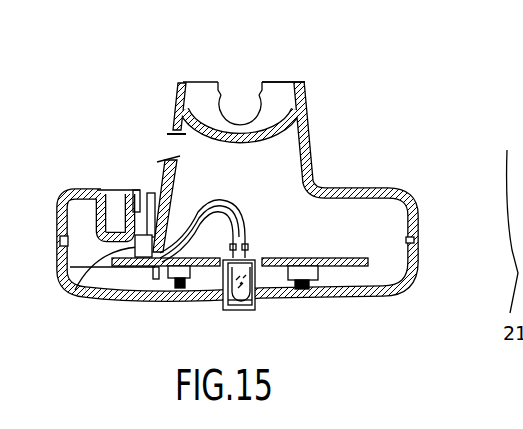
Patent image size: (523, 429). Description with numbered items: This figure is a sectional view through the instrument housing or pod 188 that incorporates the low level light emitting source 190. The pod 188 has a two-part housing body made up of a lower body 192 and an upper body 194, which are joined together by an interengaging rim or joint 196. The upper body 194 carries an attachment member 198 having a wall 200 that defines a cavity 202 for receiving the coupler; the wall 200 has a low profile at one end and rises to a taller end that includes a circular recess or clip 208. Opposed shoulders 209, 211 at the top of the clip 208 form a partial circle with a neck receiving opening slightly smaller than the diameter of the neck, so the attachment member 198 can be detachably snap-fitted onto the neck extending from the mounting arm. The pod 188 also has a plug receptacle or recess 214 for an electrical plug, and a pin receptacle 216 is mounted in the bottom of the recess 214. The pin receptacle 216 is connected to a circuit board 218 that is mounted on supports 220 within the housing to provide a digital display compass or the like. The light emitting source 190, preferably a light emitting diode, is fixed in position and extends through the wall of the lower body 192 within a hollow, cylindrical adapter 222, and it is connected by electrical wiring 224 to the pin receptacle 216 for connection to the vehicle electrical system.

The housing/pod 188 is at (246, 238).
The low level light emitting source 190 is at (258, 258).
The lower body 192 is at (383, 291).
The upper body 194 is at (353, 188).
The interengaging rim or joint 196 is at (418, 241).
The attachment member 198 is at (313, 77).
The wall 200 is at (310, 125).
The cavity 202 is at (193, 83).
The circular recess or clip 208 is at (239, 90).
The shoulder 209 is at (218, 82).
The shoulder 211 is at (257, 83).
The plug receptacle or recess 214 is at (114, 193).
The pin receptacle 216 is at (78, 288).
The circuit board 218 is at (333, 258).
The supports 220 is at (147, 297).
The hollow, cylindrical adapter 222 is at (255, 310).
The electrical wiring 224 is at (210, 190).